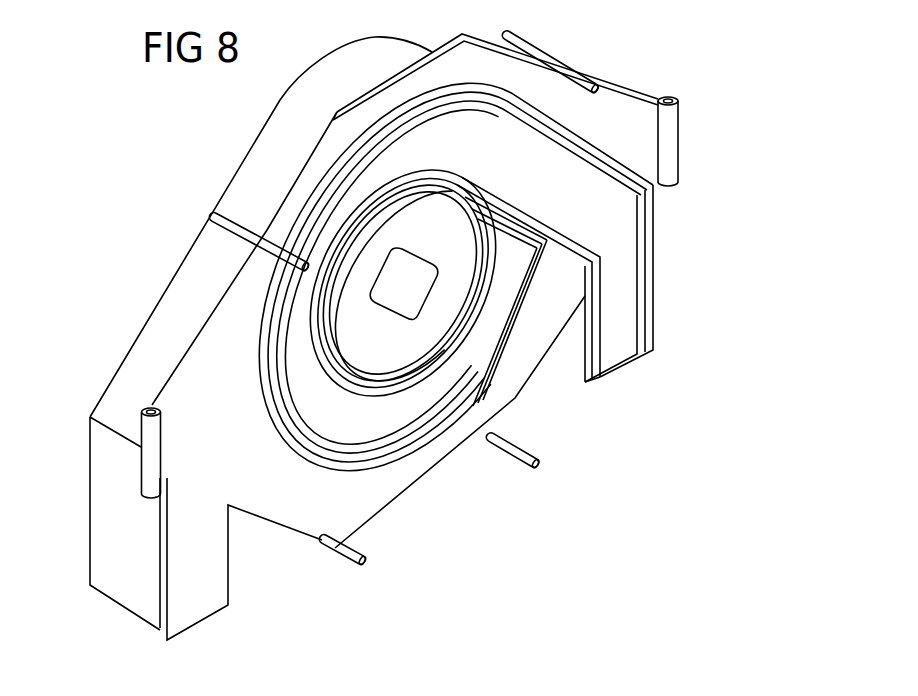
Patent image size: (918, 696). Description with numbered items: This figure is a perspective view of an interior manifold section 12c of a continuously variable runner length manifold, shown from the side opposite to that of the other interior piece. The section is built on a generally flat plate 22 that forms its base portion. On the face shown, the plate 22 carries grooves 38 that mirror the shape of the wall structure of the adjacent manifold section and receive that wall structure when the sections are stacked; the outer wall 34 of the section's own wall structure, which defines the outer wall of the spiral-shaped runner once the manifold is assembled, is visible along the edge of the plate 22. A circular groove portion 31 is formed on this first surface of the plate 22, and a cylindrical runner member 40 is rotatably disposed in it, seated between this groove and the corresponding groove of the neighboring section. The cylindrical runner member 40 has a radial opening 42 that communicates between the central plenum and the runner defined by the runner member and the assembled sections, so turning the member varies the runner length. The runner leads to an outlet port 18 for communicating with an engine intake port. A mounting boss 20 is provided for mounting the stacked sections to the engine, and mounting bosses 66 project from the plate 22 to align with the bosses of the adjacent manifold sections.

The manifold section 12c is at (664, 84).
The outlet port 18 is at (132, 580).
The mounting boss 20 is at (670, 164).
The flat plate 22 is at (190, 380).
The circular groove portion 31 is at (435, 352).
The outer wall 34 is at (287, 130).
The grooves 38 is at (562, 130).
The cylindrical runner member 40 is at (391, 347).
The radial opening 42 is at (437, 280).
The mounting bosses 66 is at (548, 56).